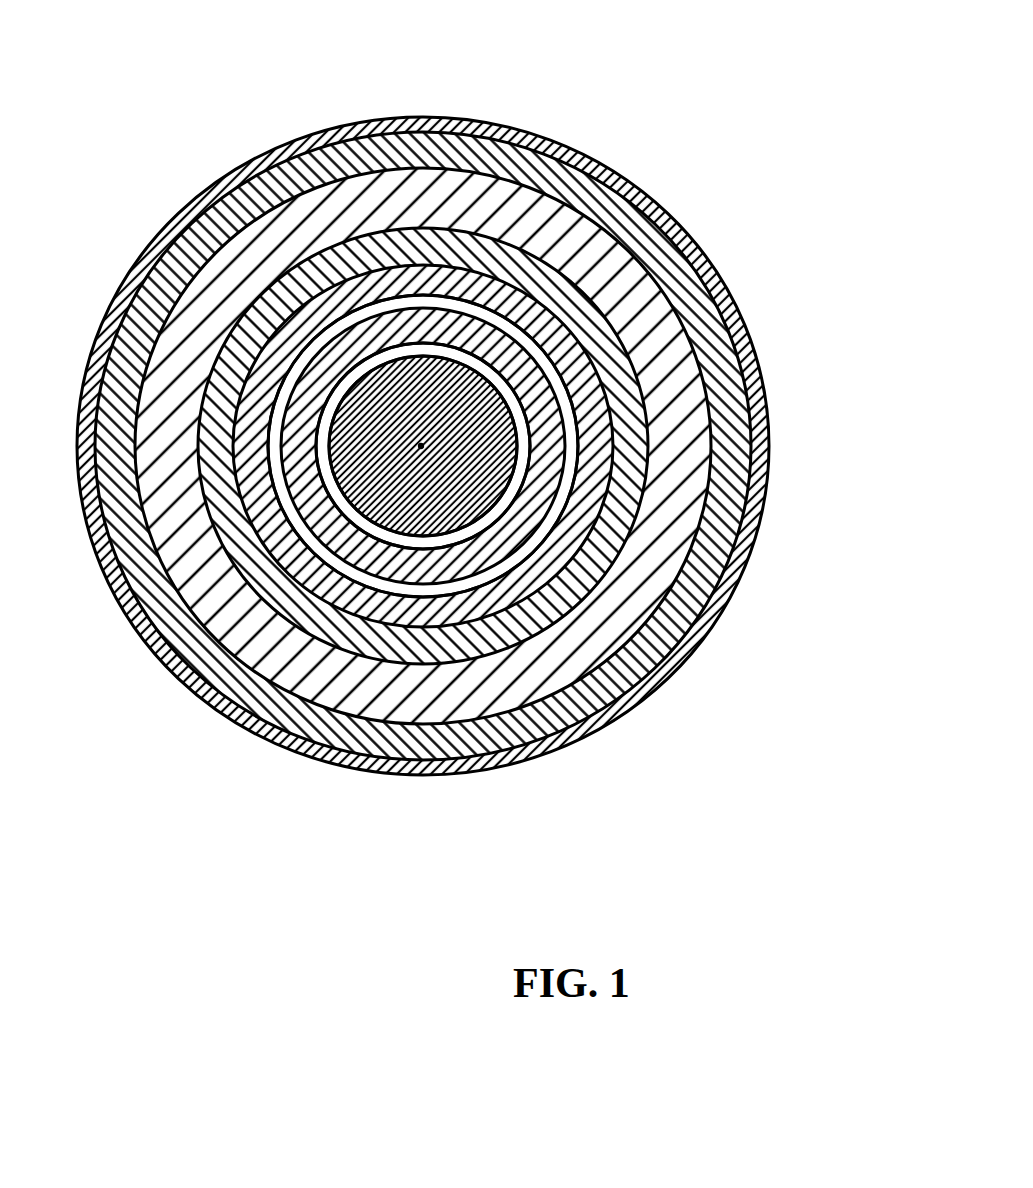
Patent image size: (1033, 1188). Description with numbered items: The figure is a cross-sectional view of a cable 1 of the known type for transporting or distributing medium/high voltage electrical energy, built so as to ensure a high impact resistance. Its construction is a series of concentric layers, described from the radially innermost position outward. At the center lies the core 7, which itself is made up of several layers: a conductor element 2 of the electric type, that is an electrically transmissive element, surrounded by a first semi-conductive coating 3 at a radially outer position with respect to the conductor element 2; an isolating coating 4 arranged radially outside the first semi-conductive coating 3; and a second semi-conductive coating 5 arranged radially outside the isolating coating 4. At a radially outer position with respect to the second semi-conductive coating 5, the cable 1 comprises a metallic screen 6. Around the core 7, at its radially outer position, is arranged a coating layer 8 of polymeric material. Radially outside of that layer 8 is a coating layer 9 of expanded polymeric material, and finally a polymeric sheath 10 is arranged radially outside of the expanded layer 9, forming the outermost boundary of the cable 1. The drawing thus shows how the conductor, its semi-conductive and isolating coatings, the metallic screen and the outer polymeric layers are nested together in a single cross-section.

The cable 1 is at (128, 125).
The conductor element 2 is at (437, 383).
The first semi-conductive coating 3 is at (480, 360).
The isolating coating 4 is at (513, 357).
The second semi-conductive coating 5 is at (577, 363).
The metallic screen 6 is at (633, 393).
The core 7 is at (647, 379).
The coating layer of polymeric material 8 is at (692, 419).
The coating layer of expanded polymeric material 9 is at (737, 478).
The polymeric sheath 10 is at (747, 538).